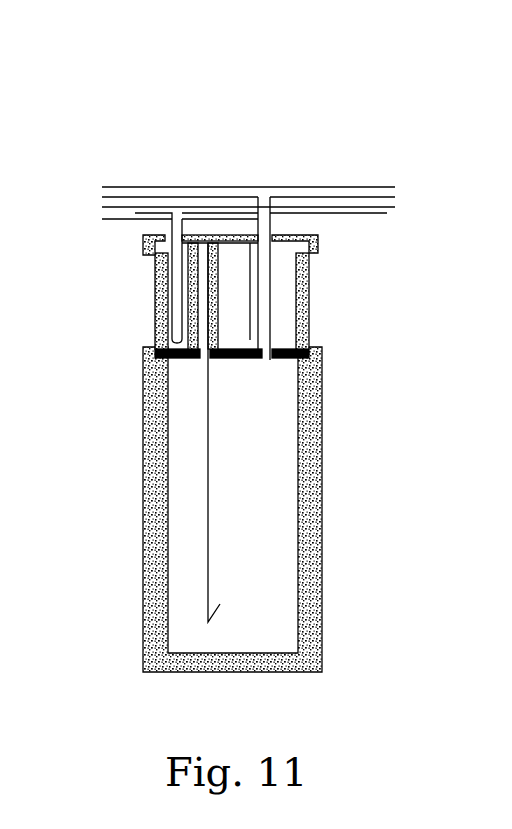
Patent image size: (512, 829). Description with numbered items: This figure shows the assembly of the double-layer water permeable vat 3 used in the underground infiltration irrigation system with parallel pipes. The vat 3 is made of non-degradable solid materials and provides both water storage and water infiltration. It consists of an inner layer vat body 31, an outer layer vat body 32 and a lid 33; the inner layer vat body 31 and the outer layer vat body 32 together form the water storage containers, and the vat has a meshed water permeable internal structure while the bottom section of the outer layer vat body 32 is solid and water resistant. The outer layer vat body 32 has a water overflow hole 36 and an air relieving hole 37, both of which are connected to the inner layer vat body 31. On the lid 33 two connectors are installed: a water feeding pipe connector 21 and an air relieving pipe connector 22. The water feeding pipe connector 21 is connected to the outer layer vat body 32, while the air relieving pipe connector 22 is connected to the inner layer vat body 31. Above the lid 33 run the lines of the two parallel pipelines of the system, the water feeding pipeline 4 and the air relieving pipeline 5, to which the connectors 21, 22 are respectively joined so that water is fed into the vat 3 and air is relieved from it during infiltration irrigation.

The double-layer water permeable vat 3 is at (492, 68).
The water feeding pipeline 4 is at (387, 213).
The air relieving pipeline 5 is at (395, 187).
The water feeding pipe connector 21 is at (150, 220).
The air relieving pipe connector 22 is at (273, 226).
The inner layer vat body 31 is at (323, 440).
The outer layer vat body 32 is at (310, 290).
The lid 33 is at (318, 247).
The water overflow hole 36 is at (196, 258).
The air relieving hole 37 is at (268, 350).